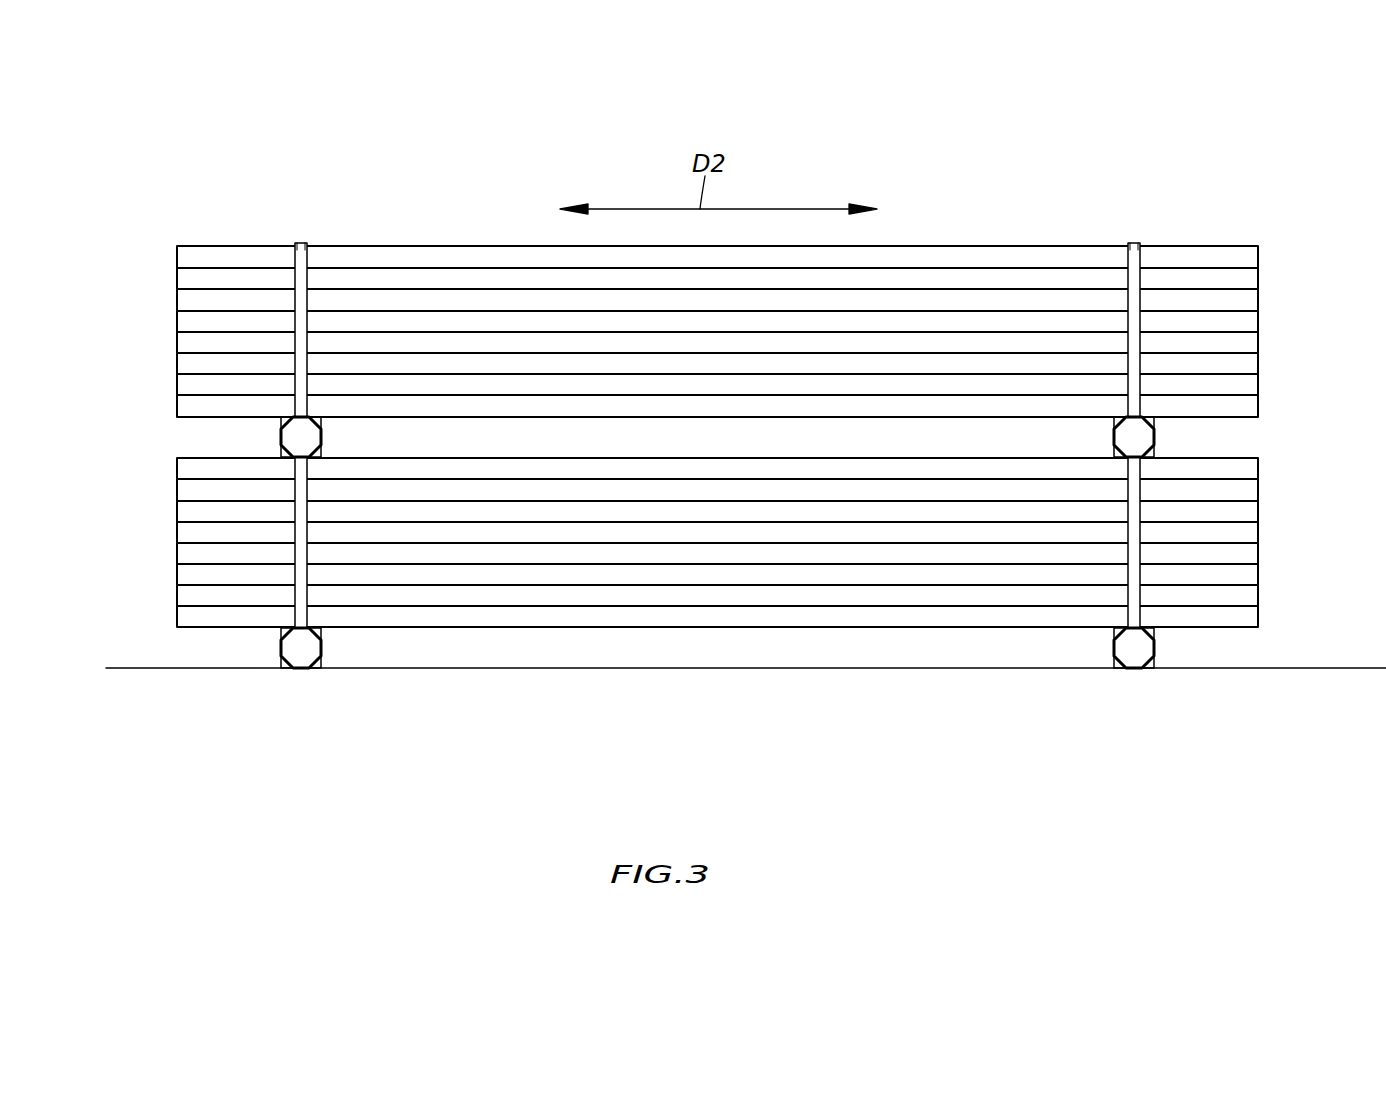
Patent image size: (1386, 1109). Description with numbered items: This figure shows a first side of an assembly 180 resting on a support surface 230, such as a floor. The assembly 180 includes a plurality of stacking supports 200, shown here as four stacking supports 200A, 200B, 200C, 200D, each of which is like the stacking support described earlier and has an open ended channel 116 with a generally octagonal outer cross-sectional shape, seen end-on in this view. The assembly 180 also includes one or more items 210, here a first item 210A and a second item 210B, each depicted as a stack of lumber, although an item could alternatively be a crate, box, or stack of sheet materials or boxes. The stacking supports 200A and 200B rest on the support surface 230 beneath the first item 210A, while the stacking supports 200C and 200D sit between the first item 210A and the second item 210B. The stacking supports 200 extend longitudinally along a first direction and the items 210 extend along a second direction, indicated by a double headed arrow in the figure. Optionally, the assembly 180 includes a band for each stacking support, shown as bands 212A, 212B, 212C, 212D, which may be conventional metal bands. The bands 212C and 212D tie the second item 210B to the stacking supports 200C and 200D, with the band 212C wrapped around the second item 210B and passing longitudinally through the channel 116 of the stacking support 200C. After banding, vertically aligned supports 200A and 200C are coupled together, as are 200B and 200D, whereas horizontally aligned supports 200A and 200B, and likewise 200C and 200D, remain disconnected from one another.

The assembly 180 is at (737, 392).
The items 210 is at (673, 446).
The first item 210A is at (491, 628).
The second item 210B is at (432, 246).
The band 212A is at (302, 537).
The band 212B is at (1140, 550).
The band 212C is at (300, 243).
The band 212D is at (1134, 243).
The stacking supports 200 is at (747, 492).
The stacking support 200A is at (284, 647).
The stacking support 200B is at (1155, 645).
The stacking support 200C is at (284, 437).
The stacking support 200D is at (1155, 436).
The channel 116 is at (308, 437).
The support surface 230 is at (1340, 668).